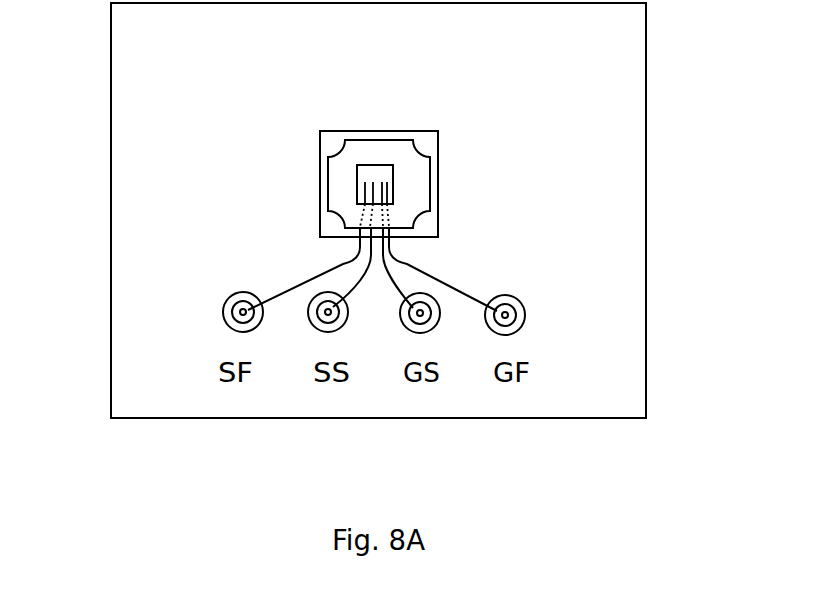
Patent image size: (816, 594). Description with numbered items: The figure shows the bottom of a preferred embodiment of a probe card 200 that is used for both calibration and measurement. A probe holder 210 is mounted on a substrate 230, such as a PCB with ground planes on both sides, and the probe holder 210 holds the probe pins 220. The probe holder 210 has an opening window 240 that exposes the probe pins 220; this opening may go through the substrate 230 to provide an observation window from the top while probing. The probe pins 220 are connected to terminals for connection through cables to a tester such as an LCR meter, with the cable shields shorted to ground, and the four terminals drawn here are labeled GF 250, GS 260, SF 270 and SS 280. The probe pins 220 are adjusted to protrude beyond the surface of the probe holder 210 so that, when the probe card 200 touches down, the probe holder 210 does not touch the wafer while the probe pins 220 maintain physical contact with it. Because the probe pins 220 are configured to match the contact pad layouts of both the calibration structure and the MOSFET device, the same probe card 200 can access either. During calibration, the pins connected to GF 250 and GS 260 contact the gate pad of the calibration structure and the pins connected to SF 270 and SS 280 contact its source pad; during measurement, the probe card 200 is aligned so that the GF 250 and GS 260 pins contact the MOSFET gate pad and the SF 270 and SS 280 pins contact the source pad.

The probe card 200 is at (664, 59).
The substrate 230 is at (555, 83).
The probe holder 210 is at (438, 151).
The opening window 240 is at (392, 170).
The probe pins 220 is at (390, 183).
The SF terminal 270 is at (220, 337).
The SS terminal 280 is at (305, 337).
The GS terminal 260 is at (438, 327).
The GF terminal 250 is at (525, 330).